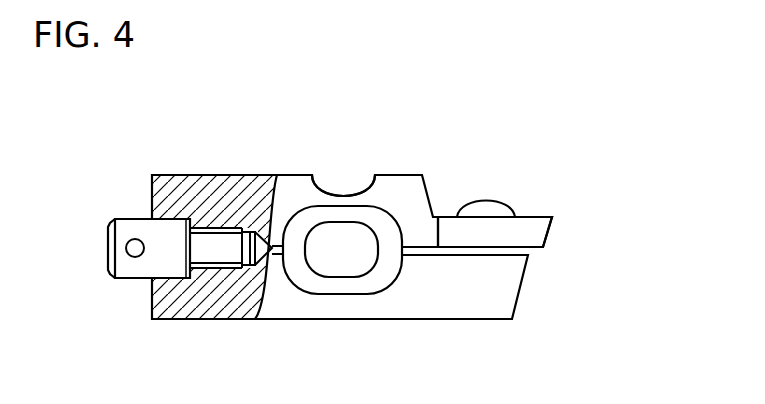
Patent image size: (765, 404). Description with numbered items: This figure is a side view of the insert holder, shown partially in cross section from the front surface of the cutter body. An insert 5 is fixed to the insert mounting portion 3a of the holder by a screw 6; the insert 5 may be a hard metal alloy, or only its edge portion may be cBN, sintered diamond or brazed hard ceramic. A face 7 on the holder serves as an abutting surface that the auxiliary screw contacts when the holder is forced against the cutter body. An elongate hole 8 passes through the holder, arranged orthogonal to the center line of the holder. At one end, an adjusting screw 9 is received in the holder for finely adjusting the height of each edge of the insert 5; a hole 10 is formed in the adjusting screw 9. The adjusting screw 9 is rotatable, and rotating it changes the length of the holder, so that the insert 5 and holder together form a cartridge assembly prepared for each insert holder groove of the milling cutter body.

The insert mounting portion 3a is at (515, 242).
The insert 5 is at (488, 230).
The screw 6 is at (472, 200).
The face 7 is at (347, 190).
The elongate hole 8 is at (315, 262).
The adjusting screw 9 is at (135, 227).
The hole 10 is at (136, 258).